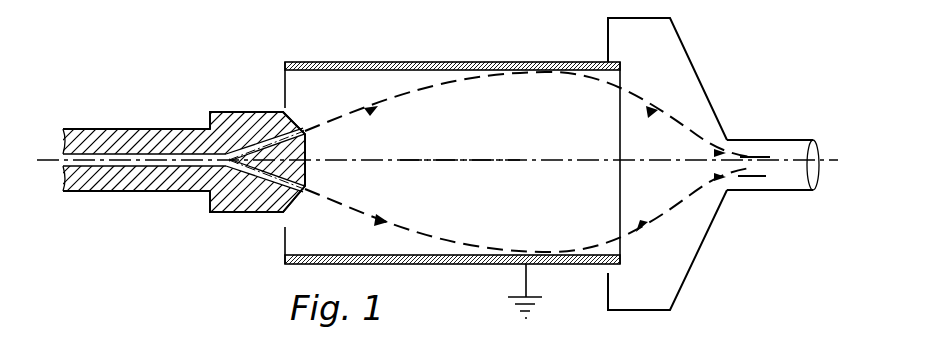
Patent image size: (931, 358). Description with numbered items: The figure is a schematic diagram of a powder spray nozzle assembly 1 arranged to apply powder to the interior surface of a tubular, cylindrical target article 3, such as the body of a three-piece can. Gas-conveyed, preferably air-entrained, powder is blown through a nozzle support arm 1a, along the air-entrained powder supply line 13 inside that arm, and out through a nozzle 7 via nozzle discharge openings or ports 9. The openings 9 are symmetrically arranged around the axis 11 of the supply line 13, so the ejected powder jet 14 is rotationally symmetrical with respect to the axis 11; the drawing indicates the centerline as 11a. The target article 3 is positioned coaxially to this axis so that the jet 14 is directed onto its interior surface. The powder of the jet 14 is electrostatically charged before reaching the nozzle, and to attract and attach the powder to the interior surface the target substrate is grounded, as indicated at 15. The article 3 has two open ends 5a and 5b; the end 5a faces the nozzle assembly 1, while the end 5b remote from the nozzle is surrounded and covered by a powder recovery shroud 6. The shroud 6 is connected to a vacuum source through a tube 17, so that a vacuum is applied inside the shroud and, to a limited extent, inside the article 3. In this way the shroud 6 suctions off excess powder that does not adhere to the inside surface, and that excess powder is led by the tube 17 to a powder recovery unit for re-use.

The powder spray nozzle assembly 1 is at (221, 58).
The nozzle support arm 1a is at (108, 191).
The axis 11 is at (44, 157).
The air-entrained powder supply line 13 is at (156, 149).
The nozzle 7 is at (268, 111).
The nozzle discharge openings 9 is at (307, 187).
The central axis 11a is at (450, 158).
The target article 3 is at (460, 62).
The open end 5a is at (285, 250).
The open end 5b is at (622, 246).
The powder jet 14 is at (421, 90).
The powder recovery shroud 6 is at (695, 58).
The tube 17 is at (806, 140).
The ground 15 is at (515, 304).